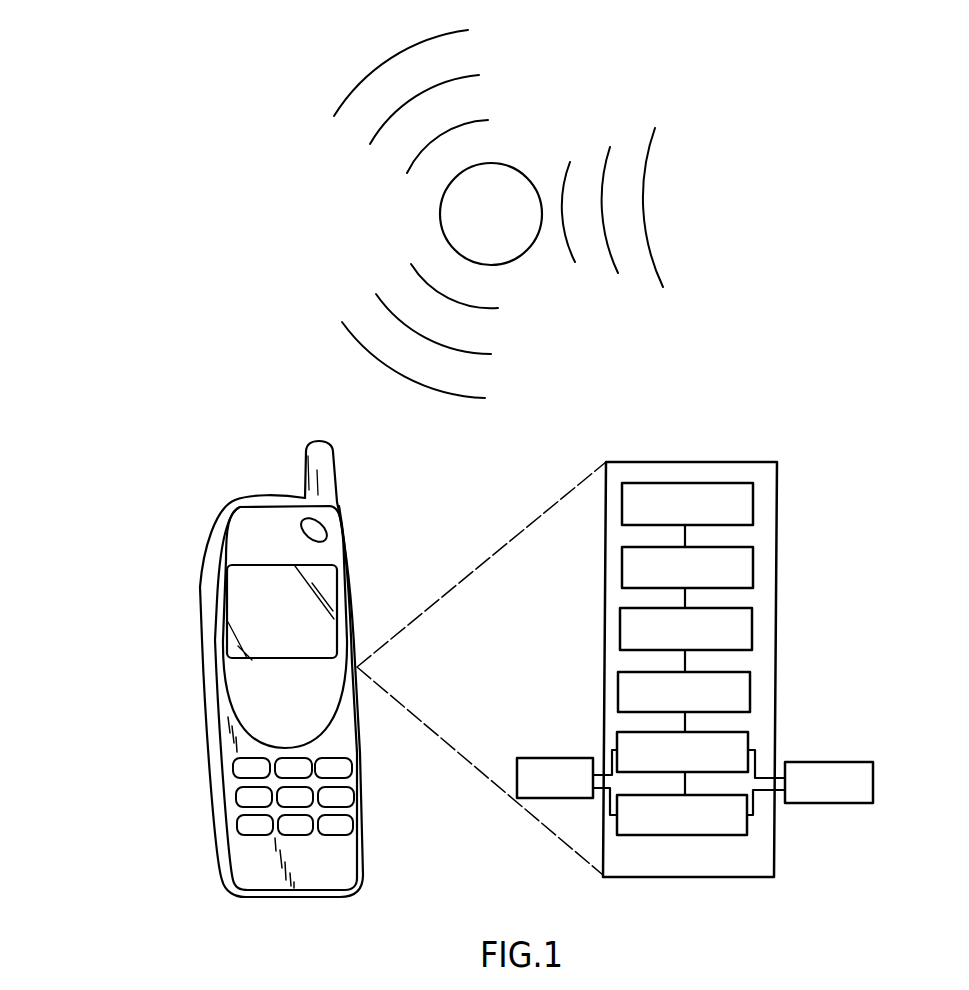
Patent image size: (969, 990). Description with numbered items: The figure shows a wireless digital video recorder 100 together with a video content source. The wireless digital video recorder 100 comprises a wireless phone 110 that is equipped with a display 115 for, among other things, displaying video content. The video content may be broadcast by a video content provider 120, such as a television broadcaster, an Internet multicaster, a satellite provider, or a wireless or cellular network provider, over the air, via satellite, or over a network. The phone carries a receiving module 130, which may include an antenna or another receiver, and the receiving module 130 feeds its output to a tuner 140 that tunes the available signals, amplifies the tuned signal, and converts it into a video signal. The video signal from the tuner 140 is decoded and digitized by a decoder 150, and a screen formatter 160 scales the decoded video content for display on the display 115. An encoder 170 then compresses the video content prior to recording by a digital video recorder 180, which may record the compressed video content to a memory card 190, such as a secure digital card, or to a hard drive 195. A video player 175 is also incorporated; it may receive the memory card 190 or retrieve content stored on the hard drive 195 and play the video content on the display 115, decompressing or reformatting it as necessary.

The wireless digital video recorder 100 is at (189, 568).
The wireless phone 110 is at (352, 612).
The display 115 is at (338, 575).
The video content provider 120 is at (520, 175).
The receiving module 130 is at (337, 478).
The tuner 140 is at (753, 506).
The decoder 150 is at (753, 566).
The screen formatter 160 is at (752, 629).
The encoder 170 is at (750, 691).
The video player 175 is at (747, 835).
The digital video recorder 180 is at (748, 732).
The memory card 190 is at (868, 762).
The hard drive 195 is at (526, 758).